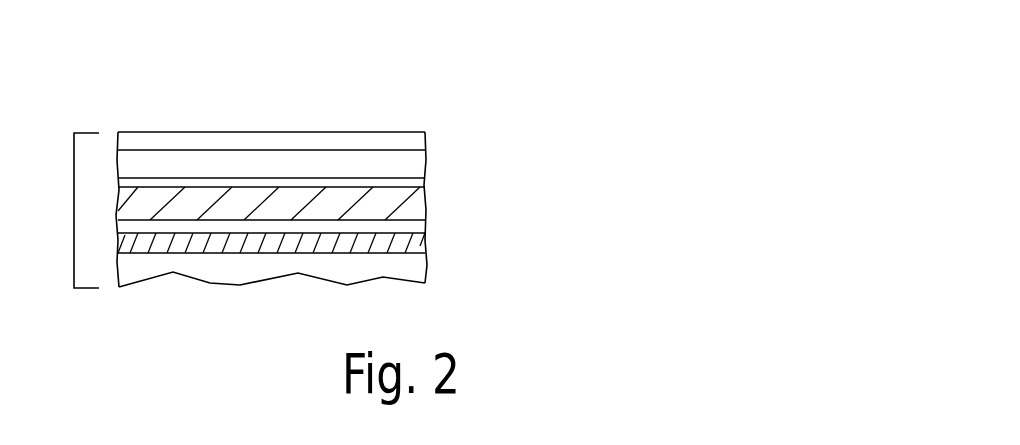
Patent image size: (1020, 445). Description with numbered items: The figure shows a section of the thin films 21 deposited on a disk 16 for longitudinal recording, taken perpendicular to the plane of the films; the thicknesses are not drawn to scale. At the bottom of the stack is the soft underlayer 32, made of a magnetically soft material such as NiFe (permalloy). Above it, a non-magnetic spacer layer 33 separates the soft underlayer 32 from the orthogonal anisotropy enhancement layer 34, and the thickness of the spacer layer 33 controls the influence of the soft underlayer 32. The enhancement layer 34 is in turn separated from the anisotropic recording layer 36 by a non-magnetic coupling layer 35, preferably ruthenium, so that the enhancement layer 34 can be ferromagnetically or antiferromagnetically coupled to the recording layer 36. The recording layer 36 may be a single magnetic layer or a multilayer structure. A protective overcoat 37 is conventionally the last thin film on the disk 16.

The disk 16 is at (148, 83).
The thin films 21 is at (74, 207).
The soft underlayer 32 is at (422, 243).
The non-magnetic spacer layer 33 is at (415, 227).
The orthogonal anisotropy enhancement layer 34 is at (418, 203).
The non-magnetic coupling layer 35 is at (415, 182).
The anisotropic recording layer 36 is at (410, 166).
The protective overcoat 37 is at (398, 142).